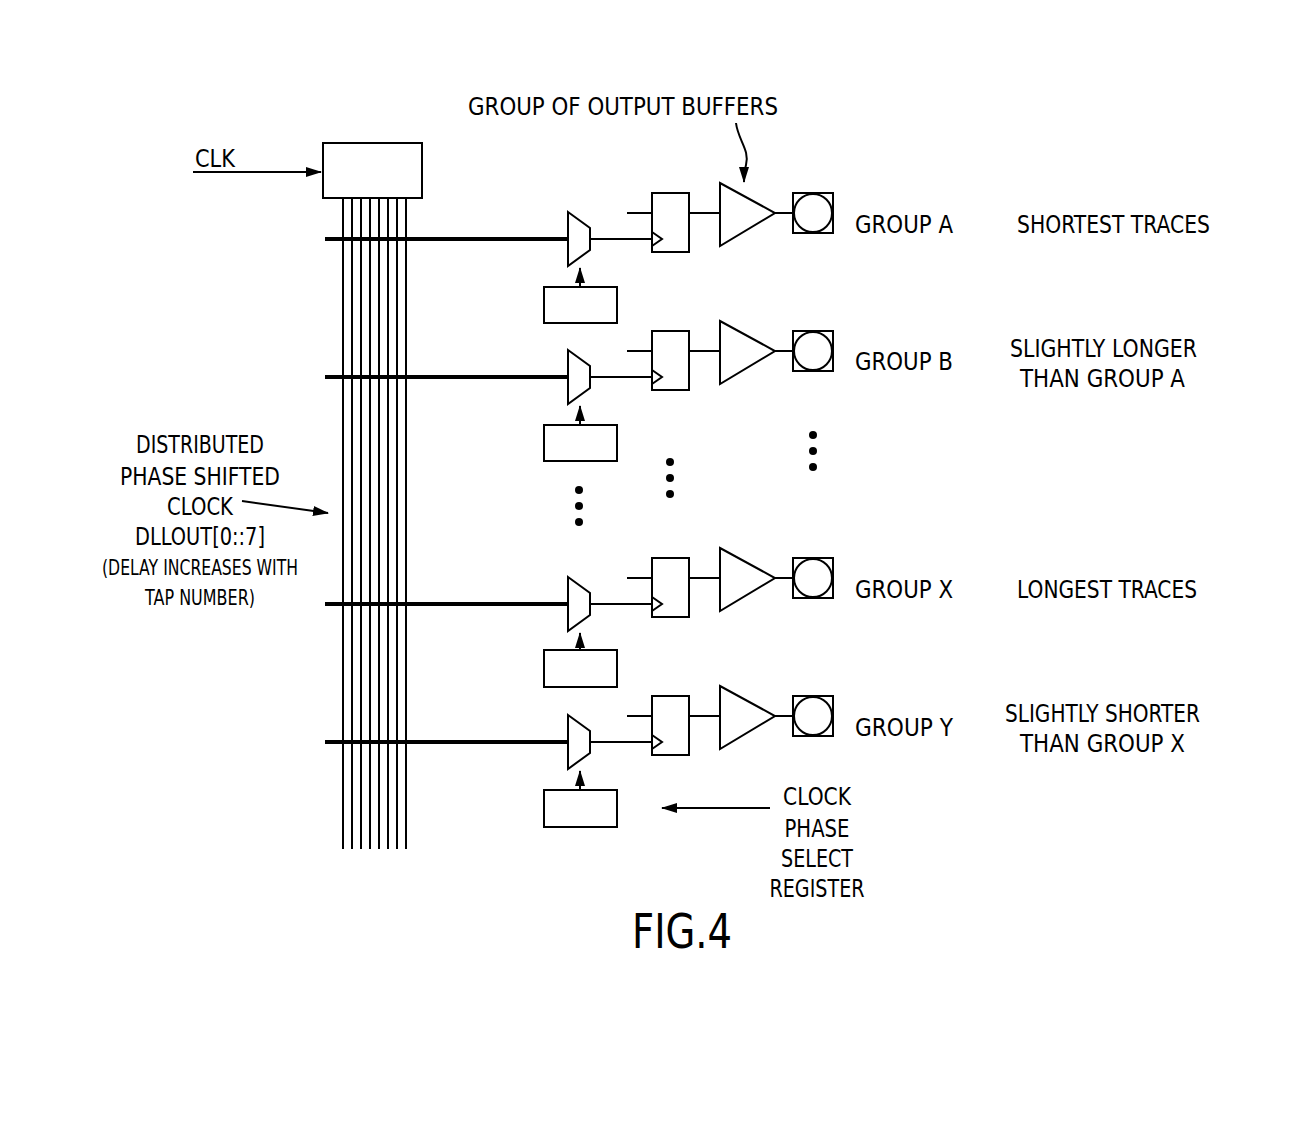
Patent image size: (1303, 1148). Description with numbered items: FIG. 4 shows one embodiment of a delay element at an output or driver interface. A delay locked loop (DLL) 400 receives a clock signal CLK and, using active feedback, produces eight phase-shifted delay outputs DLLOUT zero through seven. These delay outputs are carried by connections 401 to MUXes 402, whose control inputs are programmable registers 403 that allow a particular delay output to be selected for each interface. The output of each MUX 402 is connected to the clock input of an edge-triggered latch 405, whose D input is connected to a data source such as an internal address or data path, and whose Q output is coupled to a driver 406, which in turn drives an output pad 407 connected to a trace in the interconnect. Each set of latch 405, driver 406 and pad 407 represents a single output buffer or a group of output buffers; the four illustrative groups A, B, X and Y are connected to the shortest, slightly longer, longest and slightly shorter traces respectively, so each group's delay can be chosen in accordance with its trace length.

The delay locked loop (DLL) 400 is at (368, 143).
The connections 401 is at (447, 238).
The MUXes 402 is at (568, 255).
The programmable registers 403 is at (544, 307).
The edge-triggered latches 405 is at (665, 193).
The drivers 406 is at (757, 202).
The pads 407 is at (818, 193).